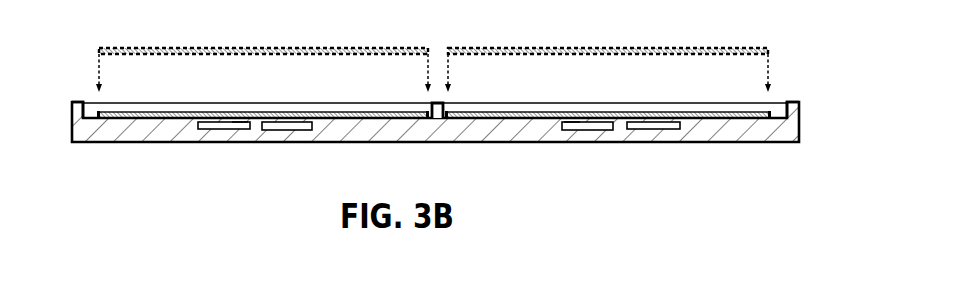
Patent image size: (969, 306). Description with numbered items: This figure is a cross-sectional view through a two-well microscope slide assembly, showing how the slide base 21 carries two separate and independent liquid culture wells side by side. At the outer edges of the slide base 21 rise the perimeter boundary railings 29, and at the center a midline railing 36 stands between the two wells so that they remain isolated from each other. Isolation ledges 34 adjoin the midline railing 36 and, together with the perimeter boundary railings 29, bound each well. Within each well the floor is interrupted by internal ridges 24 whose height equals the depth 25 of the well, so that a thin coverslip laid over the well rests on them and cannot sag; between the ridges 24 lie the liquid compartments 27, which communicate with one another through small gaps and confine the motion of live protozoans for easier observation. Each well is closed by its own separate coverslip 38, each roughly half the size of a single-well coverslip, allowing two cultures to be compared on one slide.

The slide base 21 is at (125, 142).
The ridges 24 is at (257, 130).
The depth of the well 25 is at (205, 124).
The liquid compartments 27 is at (231, 122).
The perimeter boundary railings 29 is at (78, 102).
The isolation ledges 34 is at (355, 117).
The midline railing 36 is at (438, 116).
The coverslips 38 is at (204, 48).